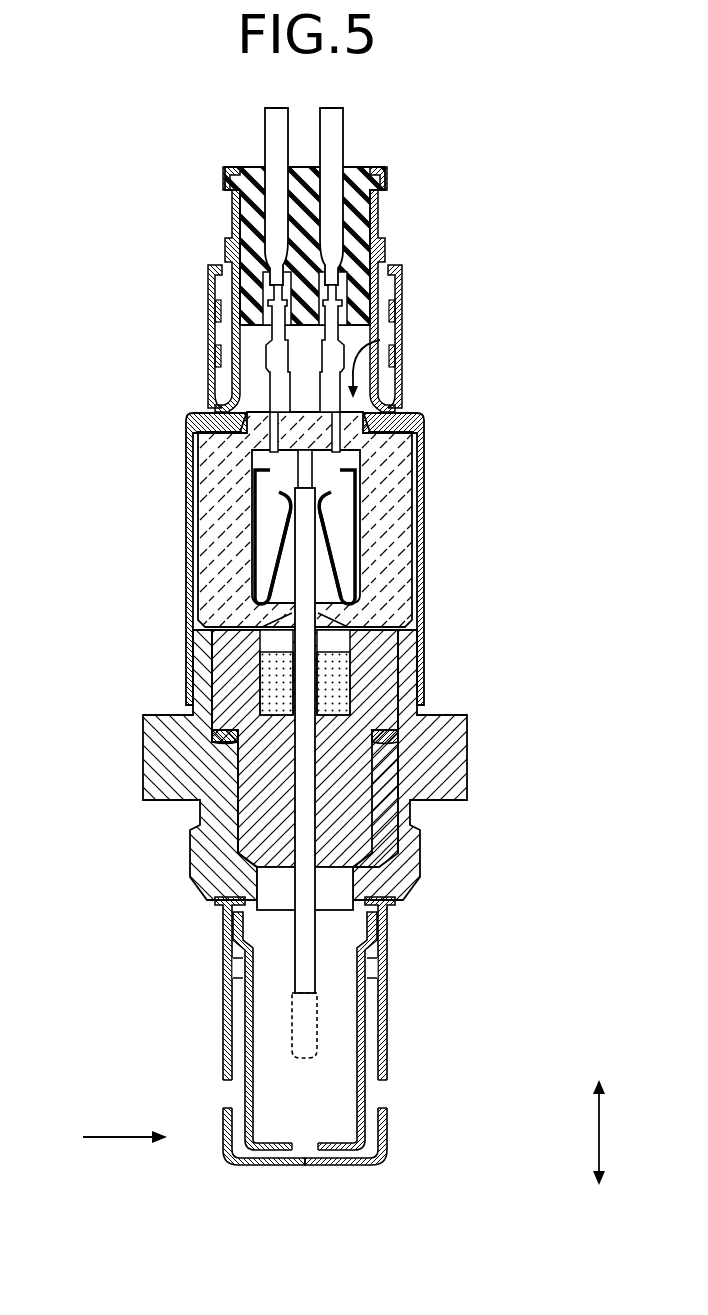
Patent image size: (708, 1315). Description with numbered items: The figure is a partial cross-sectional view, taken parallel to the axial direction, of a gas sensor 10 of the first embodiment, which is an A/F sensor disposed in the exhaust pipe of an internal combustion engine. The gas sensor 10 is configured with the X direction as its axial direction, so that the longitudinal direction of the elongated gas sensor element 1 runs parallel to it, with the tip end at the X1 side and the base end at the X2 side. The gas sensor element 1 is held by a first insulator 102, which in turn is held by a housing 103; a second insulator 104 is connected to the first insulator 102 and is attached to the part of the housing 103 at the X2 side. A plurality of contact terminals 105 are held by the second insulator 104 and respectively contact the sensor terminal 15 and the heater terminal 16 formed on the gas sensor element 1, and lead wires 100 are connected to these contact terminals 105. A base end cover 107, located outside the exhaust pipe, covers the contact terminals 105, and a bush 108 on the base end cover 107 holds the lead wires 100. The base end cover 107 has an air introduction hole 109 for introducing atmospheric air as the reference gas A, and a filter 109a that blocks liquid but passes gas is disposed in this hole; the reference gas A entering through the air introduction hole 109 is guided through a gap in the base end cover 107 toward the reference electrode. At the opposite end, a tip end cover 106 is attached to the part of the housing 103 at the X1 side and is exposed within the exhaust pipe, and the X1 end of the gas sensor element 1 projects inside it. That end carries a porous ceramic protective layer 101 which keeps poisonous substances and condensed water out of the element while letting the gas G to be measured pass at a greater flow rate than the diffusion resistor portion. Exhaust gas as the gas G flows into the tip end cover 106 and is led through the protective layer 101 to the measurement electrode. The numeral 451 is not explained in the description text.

The gas sensor element 1 is at (302, 930).
The gas sensor 10 is at (461, 139).
The sensor terminal 15 is at (290, 520).
The heater terminal 16 is at (330, 518).
The lead wire 100 is at (332, 142).
The protective layer 101 is at (304, 1030).
The first insulator 102 is at (345, 758).
The housing 103 is at (438, 782).
The second insulator 104 is at (385, 593).
The contact terminal 105 is at (268, 565).
The tip end cover 106 is at (228, 1020).
The base end cover 107 is at (188, 420).
The bush 108 is at (348, 213).
The air introduction hole 109 is at (400, 335).
The filter 109a is at (400, 347).
The vent hole 451 is at (250, 968).
The reference gas A is at (383, 342).
The gas to be measured G is at (125, 1123).
The axial direction X is at (605, 1132).
The X1 side X1 is at (597, 1206).
The X2 side X2 is at (597, 1058).